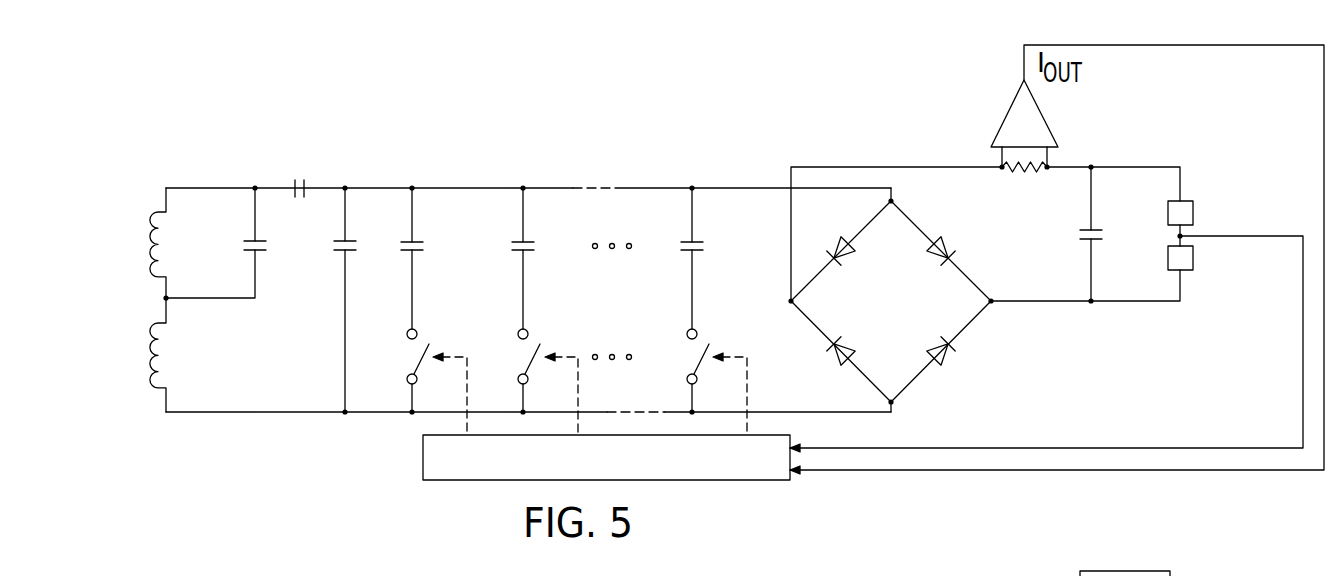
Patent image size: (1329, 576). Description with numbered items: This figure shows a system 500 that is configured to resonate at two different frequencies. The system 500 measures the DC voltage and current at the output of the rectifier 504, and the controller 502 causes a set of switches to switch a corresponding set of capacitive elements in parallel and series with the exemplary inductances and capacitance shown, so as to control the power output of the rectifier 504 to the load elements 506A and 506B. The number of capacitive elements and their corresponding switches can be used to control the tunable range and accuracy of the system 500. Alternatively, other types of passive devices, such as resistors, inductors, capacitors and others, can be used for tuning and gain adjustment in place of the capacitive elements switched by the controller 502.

The system 500 is at (177, 143).
The controller 502 is at (423, 458).
The rectifier 504 is at (944, 379).
The load element 506A is at (1194, 213).
The load element 506B is at (1194, 258).